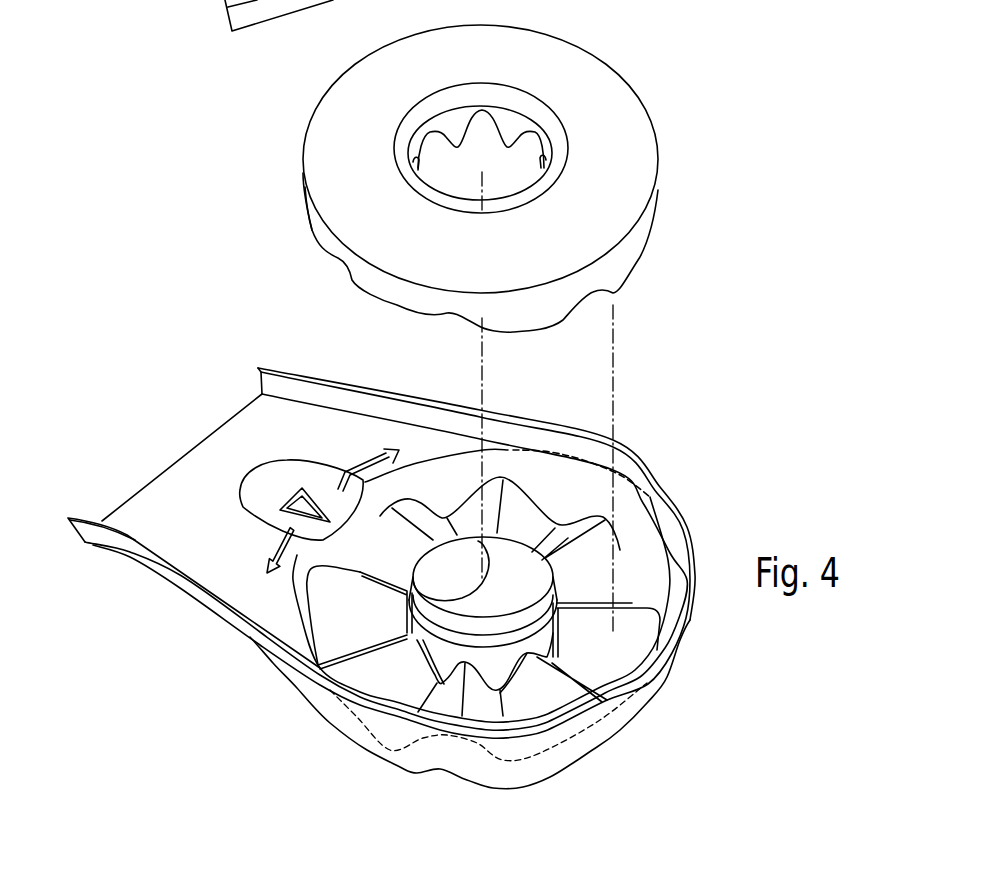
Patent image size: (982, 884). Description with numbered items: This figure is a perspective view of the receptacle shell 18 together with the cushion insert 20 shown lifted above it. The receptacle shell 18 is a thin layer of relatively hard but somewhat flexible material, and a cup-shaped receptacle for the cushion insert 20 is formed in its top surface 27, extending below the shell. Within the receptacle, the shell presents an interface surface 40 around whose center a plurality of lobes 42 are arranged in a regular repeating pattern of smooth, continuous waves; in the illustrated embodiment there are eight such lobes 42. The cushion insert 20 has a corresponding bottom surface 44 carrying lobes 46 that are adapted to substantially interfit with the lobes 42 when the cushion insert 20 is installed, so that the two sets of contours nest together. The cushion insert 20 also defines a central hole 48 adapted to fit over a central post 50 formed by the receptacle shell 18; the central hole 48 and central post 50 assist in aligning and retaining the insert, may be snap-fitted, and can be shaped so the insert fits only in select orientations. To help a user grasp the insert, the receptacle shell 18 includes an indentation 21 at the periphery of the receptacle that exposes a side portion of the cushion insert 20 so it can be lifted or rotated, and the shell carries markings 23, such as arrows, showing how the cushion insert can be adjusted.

The receptacle shell 18 is at (122, 548).
The cushion insert 20 is at (660, 200).
The indentation 21 is at (257, 513).
The markings 23 is at (272, 557).
The top surface 27 is at (210, 468).
The interface surface 40 is at (543, 697).
The lobes 42 is at (623, 613).
The bottom surface 44 is at (617, 232).
The lobes 46 is at (508, 147).
The central hole 48 is at (511, 181).
The central post 50 is at (518, 552).